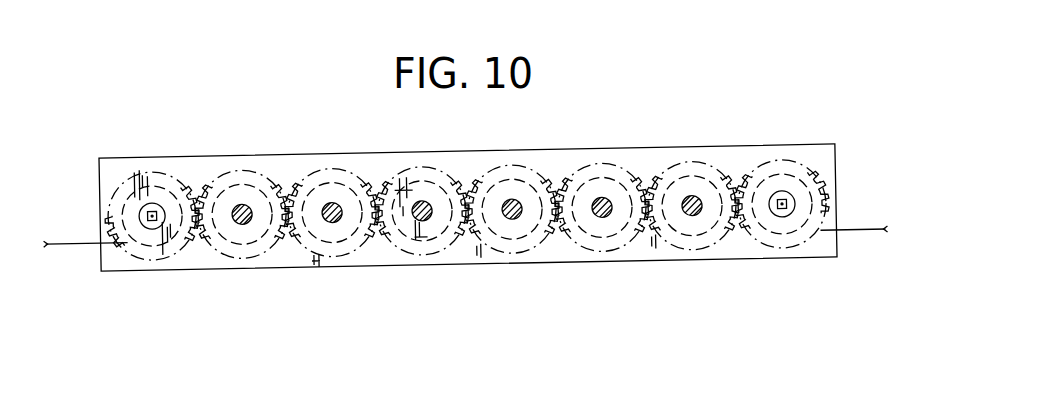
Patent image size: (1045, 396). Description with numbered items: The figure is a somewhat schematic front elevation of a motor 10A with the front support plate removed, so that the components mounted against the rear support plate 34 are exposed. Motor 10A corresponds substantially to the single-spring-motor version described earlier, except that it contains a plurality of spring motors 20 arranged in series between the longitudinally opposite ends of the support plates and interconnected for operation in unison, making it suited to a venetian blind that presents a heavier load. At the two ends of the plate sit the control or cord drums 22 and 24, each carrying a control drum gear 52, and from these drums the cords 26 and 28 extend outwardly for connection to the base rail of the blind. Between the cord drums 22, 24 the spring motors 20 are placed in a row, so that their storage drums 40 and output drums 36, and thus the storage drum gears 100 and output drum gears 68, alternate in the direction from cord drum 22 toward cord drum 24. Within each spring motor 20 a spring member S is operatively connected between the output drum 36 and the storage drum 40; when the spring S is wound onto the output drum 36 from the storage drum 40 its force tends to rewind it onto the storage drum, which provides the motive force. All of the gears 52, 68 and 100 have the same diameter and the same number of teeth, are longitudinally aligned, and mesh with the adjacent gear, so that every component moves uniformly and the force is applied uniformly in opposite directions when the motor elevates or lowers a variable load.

The motor 10A is at (172, 115).
The spring motor 20 is at (289, 163).
The spring member S is at (275, 198).
The rear support plate 34 is at (742, 155).
The control drum gear 52 is at (110, 228).
The cord 28 is at (68, 245).
The cord 26 is at (863, 238).
The control drum 24 is at (142, 268).
The control drum 22 is at (775, 258).
The output drum 36 is at (232, 270).
The storage drum 40 is at (349, 265).
The output drum gear 68 is at (252, 262).
The storage drum gear 100 is at (330, 262).